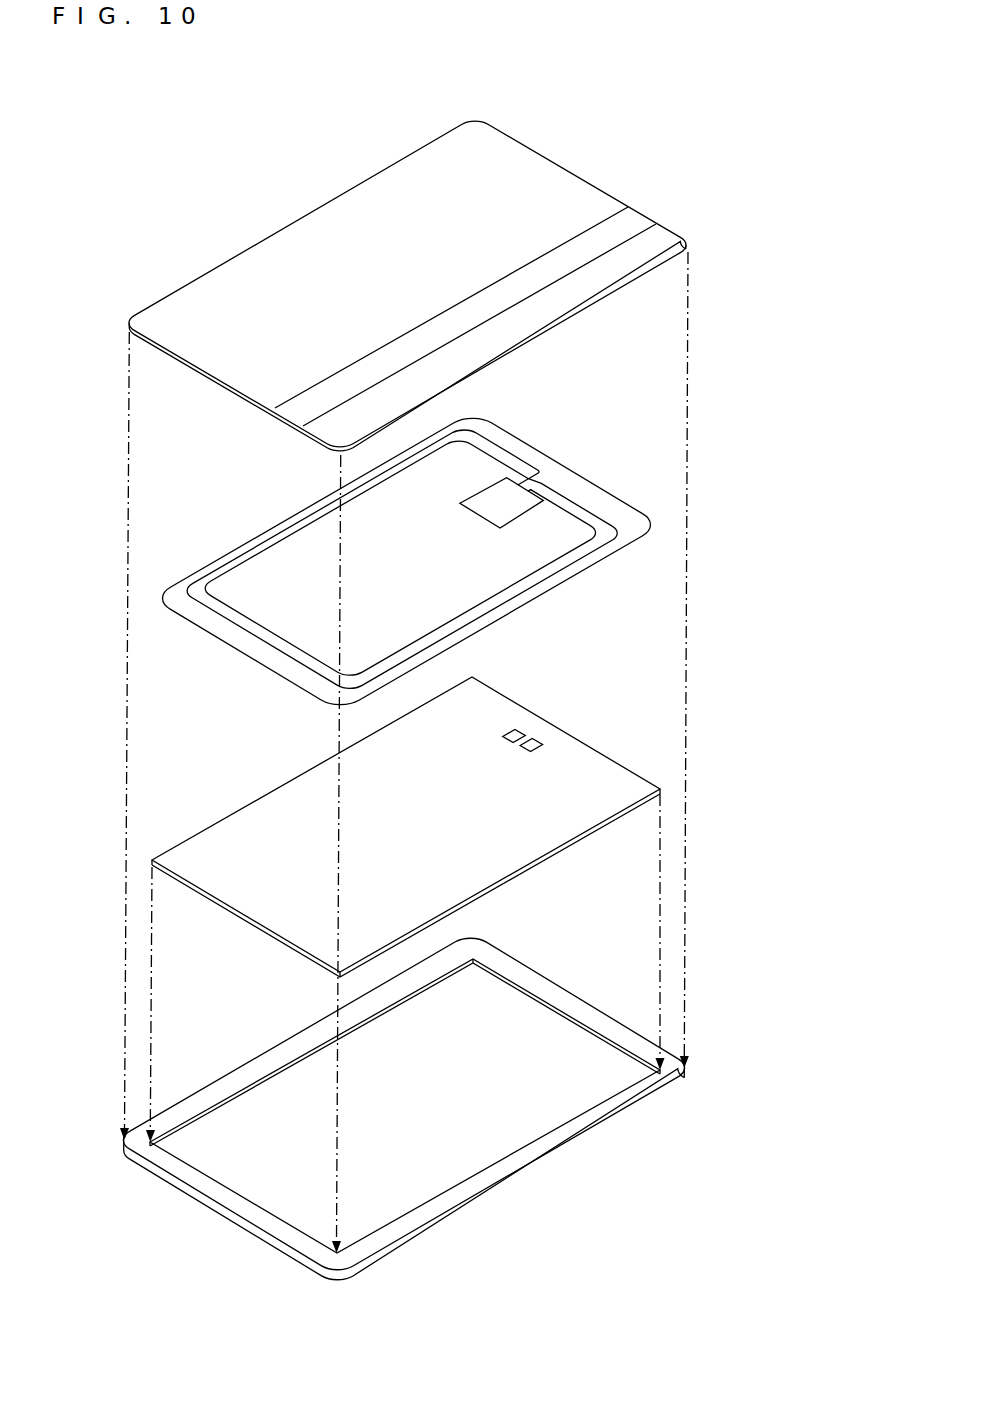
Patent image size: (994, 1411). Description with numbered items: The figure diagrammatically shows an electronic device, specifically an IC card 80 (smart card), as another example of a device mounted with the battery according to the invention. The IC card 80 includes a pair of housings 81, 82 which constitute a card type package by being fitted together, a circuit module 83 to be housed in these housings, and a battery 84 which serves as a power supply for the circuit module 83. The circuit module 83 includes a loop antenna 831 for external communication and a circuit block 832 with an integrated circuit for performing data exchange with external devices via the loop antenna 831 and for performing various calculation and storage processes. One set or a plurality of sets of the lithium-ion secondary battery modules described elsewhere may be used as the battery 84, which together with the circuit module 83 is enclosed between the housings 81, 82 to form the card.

The IC card 80 is at (188, 152).
The housing 81 is at (225, 282).
The housing 82 is at (222, 1220).
The circuit module 83 is at (522, 442).
The loop antenna 831 is at (278, 543).
The circuit block 832 is at (512, 512).
The battery 84 is at (563, 727).